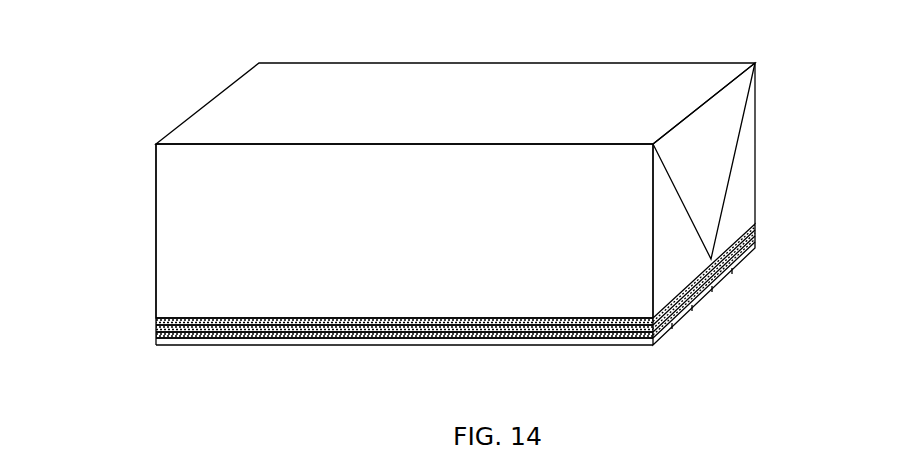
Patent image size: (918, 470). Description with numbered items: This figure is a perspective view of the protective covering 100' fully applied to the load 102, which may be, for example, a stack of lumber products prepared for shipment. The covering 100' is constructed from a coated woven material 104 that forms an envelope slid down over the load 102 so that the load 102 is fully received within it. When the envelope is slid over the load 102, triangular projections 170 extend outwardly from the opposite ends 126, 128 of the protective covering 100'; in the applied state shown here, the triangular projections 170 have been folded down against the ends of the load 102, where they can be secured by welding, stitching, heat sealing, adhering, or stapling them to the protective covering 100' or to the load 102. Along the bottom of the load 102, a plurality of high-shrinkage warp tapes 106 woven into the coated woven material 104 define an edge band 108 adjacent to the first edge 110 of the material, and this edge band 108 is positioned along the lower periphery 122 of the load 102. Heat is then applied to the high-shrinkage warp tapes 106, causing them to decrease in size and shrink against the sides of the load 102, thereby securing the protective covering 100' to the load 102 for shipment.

The protective covering 100' is at (356, 170).
The coated woven material 104 is at (594, 87).
The end of the protective covering 126 is at (155, 216).
The end of the protective covering 128 is at (745, 215).
The triangular projections 170 is at (703, 137).
The load 102 is at (717, 287).
The edge band 108 is at (497, 319).
The first edge 110 is at (270, 330).
The lower periphery 122 is at (408, 337).
The high-shrinkage warp tapes 106 is at (157, 330).